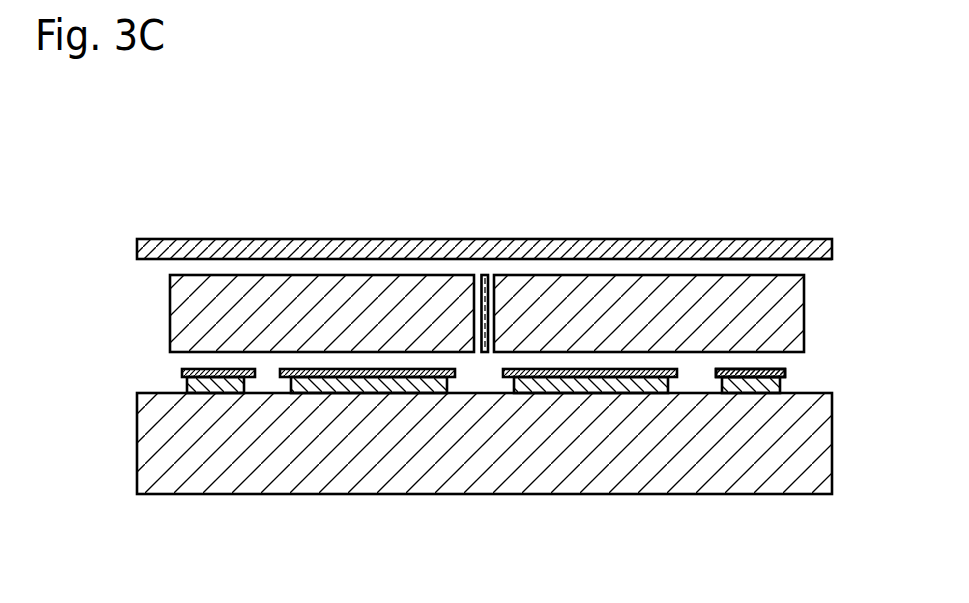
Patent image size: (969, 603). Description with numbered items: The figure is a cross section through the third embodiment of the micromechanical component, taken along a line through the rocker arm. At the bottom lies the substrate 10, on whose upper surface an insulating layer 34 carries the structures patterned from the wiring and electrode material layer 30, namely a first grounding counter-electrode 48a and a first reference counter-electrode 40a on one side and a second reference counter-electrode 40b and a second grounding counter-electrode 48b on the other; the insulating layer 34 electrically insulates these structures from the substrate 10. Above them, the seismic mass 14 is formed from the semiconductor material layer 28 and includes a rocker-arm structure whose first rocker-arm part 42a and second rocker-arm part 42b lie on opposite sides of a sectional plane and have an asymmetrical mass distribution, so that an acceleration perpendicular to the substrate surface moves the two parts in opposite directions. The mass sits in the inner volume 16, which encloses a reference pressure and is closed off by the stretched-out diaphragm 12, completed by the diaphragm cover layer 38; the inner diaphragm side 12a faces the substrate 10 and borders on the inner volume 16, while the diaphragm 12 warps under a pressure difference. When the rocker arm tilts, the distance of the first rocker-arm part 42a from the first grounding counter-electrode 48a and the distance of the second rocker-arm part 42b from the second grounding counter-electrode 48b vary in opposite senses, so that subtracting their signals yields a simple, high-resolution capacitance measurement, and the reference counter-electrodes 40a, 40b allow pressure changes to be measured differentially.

The substrate 10 is at (800, 448).
The diaphragm 12 is at (673, 248).
The inner diaphragm side 12a is at (804, 268).
The seismic mass 14 is at (540, 268).
The inner volume 16 is at (372, 267).
The semiconductor material layer 28 is at (106, 275).
The wiring and electrode material layer 30 is at (106, 366).
The insulating layer 34 is at (434, 383).
The diaphragm cover layer 38 is at (106, 240).
The first reference counter-electrode 40a is at (341, 373).
The second reference counter-electrode 40b is at (544, 373).
The first rocker-arm part 42a is at (213, 288).
The second rocker-arm part 42b is at (793, 338).
The first grounding counter-electrode 48a is at (207, 379).
The second grounding counter-electrode 48b is at (787, 367).